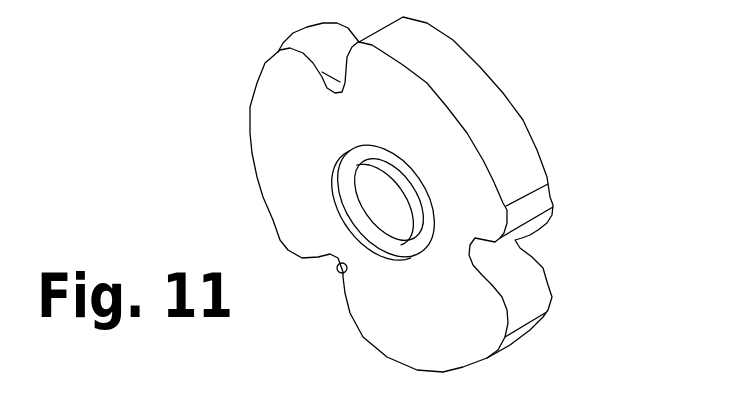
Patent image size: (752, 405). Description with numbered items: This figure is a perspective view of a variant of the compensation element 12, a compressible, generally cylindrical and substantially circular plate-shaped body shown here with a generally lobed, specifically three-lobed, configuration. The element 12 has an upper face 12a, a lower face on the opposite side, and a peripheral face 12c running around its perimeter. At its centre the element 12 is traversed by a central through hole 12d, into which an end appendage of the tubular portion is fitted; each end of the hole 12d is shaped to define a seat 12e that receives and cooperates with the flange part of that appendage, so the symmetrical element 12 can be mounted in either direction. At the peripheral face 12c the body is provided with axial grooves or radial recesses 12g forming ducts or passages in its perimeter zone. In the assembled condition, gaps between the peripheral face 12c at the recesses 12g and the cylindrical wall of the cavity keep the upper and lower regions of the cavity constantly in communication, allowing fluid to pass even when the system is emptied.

The compensation element 12 is at (573, 66).
The upper face 12a is at (266, 133).
The peripheral face 12c is at (523, 147).
The central through hole 12d is at (373, 194).
The seat 12e is at (353, 145).
The axial grooves or radial recesses 12g is at (334, 83).